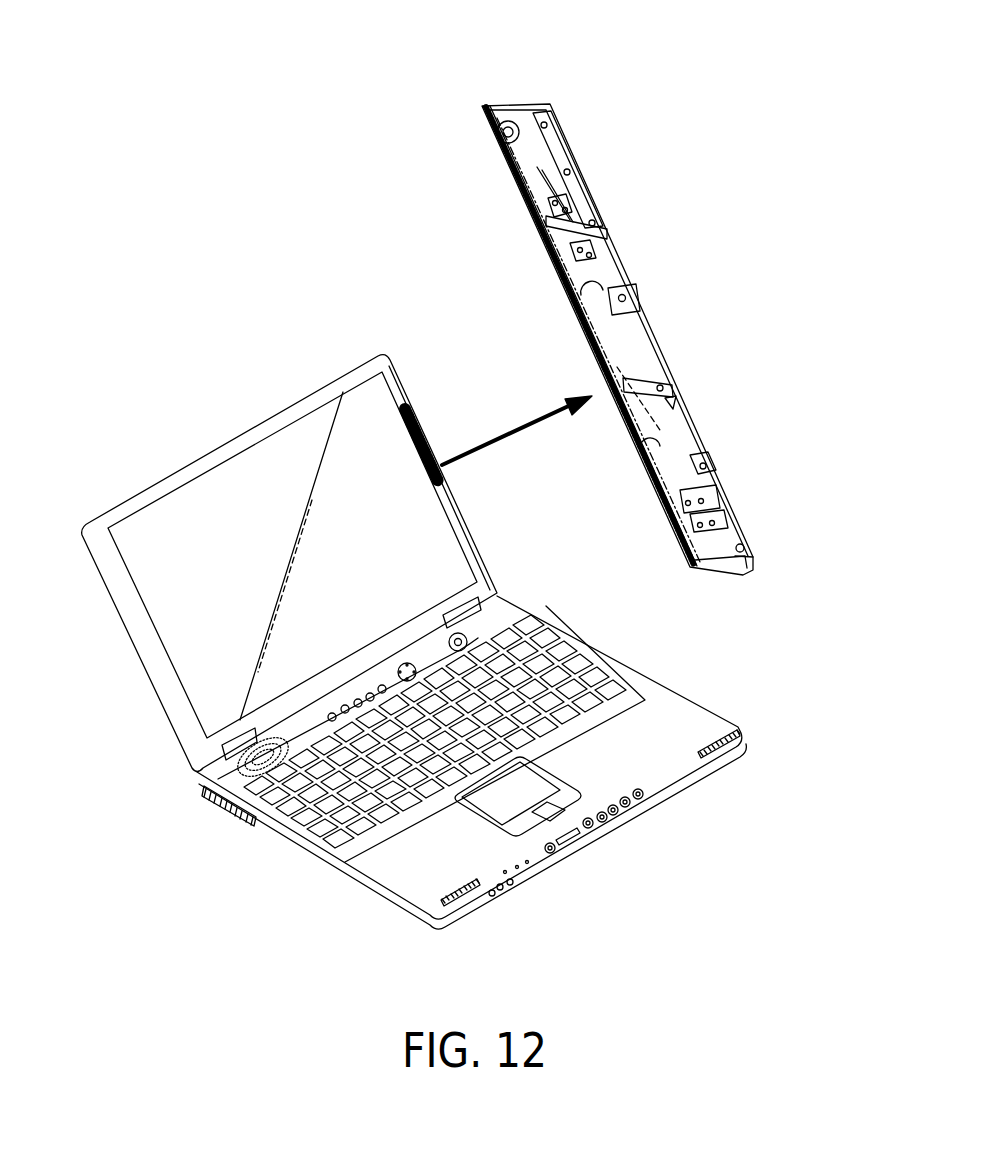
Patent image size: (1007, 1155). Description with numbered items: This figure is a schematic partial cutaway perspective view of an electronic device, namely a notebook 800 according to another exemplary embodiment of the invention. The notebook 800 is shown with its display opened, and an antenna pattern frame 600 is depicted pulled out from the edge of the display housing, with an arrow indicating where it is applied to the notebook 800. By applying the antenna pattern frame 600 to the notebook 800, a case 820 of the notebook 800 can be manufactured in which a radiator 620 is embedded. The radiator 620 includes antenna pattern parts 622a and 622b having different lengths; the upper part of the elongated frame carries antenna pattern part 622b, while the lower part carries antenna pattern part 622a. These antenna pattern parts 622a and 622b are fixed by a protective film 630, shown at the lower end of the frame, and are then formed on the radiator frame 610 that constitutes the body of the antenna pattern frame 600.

The antenna pattern frame 600 is at (628, 340).
The radiator frame 610 is at (627, 335).
The radiator 620 is at (692, 393).
The antenna pattern part 622a is at (717, 503).
The antenna pattern part 622b is at (563, 158).
The protective film 630 is at (751, 557).
The notebook 800 is at (414, 642).
The case 820 is at (463, 519).